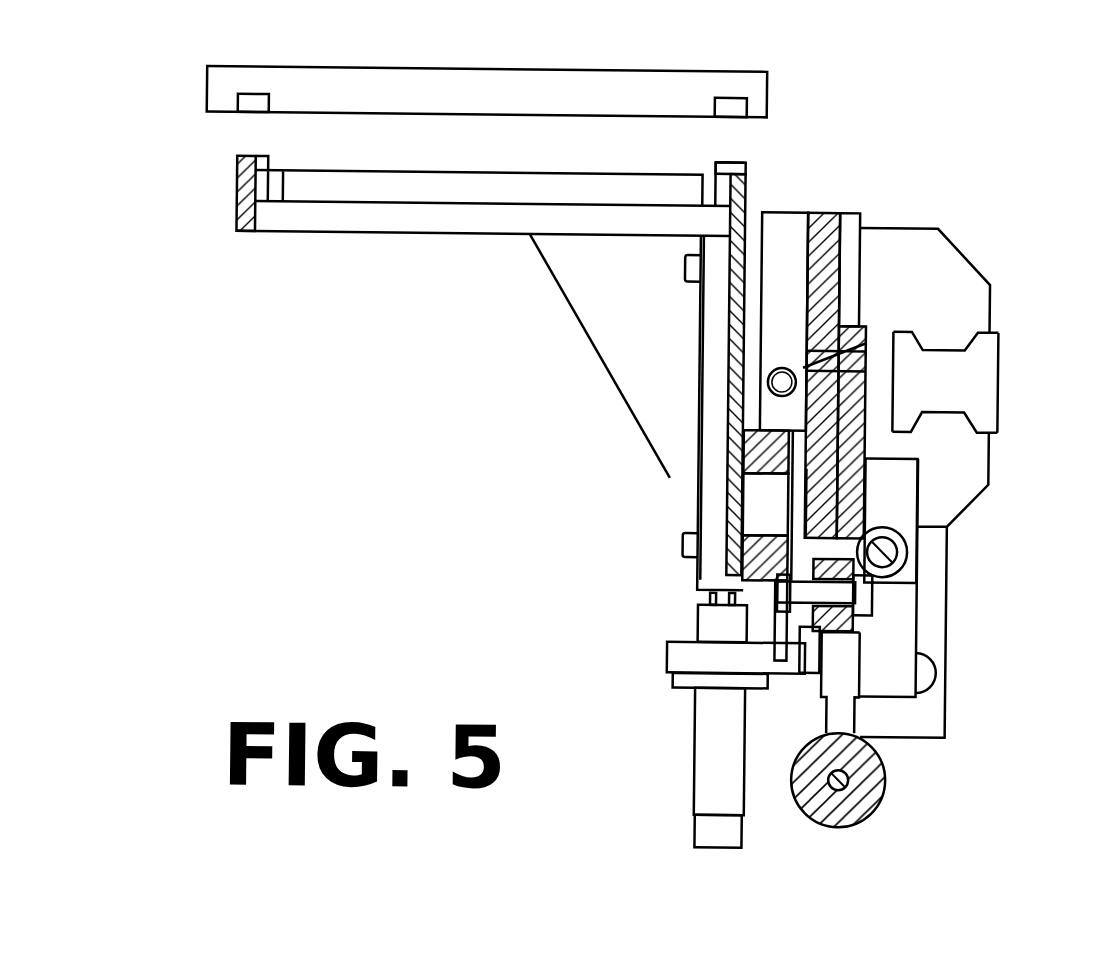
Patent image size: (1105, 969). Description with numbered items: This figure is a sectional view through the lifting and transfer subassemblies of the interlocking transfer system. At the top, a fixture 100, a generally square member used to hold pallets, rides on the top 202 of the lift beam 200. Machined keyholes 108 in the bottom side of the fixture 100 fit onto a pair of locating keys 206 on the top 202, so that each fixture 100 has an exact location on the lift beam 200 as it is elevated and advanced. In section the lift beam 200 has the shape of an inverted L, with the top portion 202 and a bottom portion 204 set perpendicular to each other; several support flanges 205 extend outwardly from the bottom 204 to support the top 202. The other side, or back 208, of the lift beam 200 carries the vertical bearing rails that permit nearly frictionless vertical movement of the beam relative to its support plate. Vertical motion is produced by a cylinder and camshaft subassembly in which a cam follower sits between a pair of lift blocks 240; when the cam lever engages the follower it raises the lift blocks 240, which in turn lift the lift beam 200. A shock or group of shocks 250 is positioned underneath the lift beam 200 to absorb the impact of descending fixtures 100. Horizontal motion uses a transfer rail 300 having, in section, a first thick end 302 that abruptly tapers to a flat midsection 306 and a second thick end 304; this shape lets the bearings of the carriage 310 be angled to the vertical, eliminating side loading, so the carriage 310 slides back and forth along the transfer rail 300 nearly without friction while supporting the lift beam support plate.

The fixture 100 is at (512, 84).
The keyholes 108 is at (246, 112).
The lift beam 200 is at (706, 367).
The top portion of the lift beam 202 is at (476, 186).
The bottom portion of the lift beam 204 is at (706, 505).
The support flanges 205 is at (598, 294).
The locating keys 206 is at (246, 170).
The back side of the lift beam 208 is at (742, 208).
The lift blocks 240 is at (750, 453).
The shocks 250 is at (698, 773).
The transfer rail 300 is at (990, 379).
The first thick end of the transfer rail 302 is at (989, 340).
The second thick end of the transfer rail 304 is at (906, 336).
The flat midsection of the transfer rail 306 is at (950, 391).
The carriage 310 is at (955, 498).